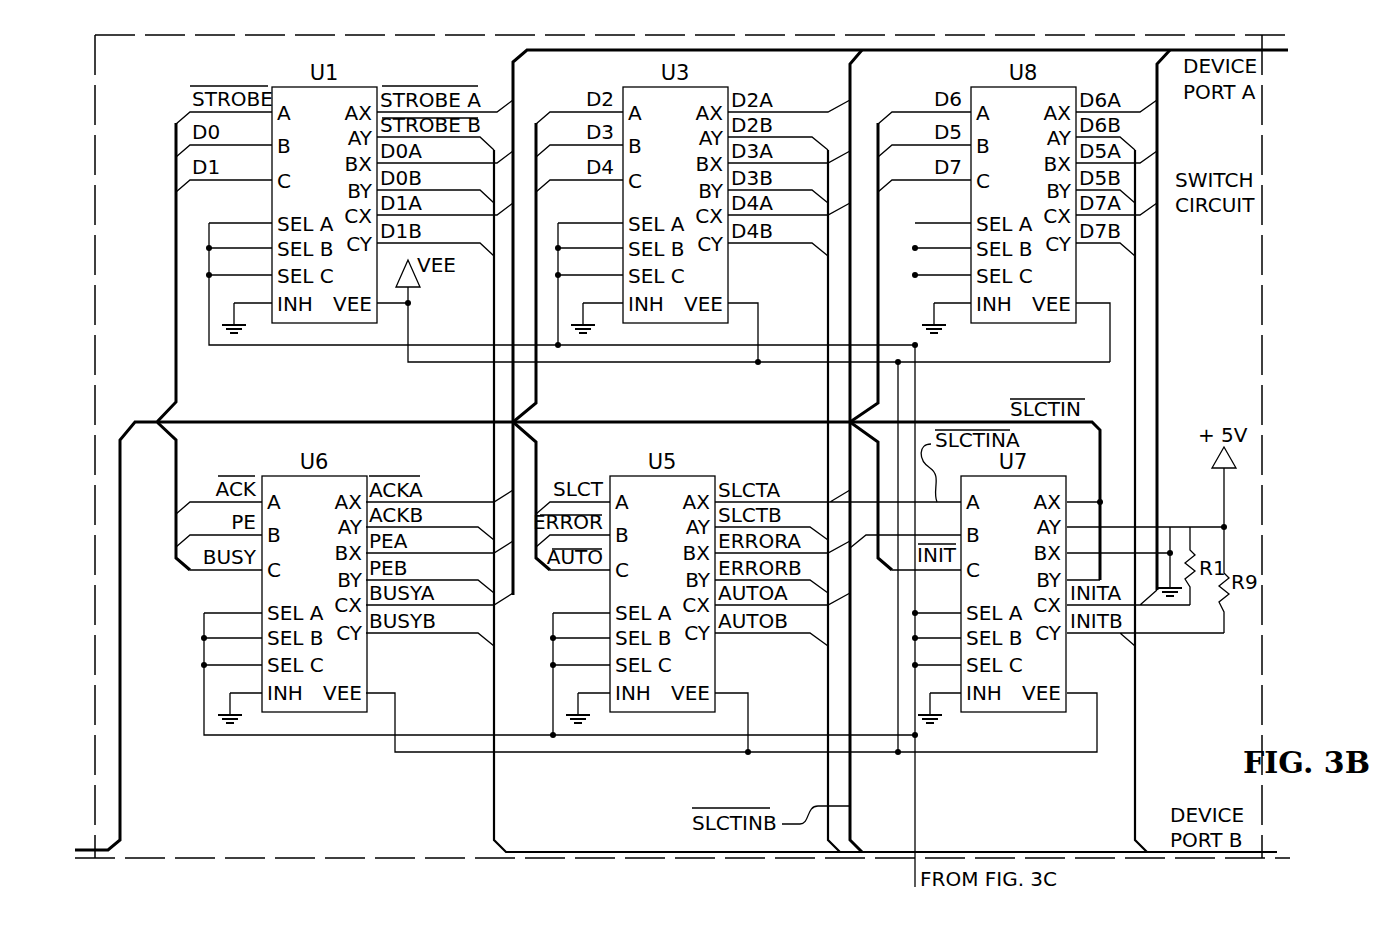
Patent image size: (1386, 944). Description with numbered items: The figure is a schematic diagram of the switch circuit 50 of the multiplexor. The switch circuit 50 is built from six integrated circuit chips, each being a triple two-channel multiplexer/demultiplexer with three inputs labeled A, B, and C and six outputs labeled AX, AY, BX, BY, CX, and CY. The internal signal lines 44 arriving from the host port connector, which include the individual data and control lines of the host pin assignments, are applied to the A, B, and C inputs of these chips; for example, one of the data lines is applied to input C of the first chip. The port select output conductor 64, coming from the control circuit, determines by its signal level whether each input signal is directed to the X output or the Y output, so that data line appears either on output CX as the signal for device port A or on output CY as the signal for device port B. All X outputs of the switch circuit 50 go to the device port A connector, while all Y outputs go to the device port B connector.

The internal signal lines 44 is at (118, 803).
The switch circuit 50 is at (372, 858).
The port select output conductor 64 is at (915, 810).